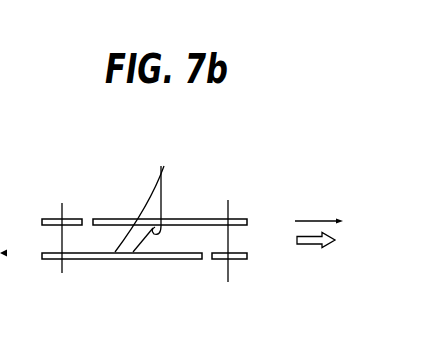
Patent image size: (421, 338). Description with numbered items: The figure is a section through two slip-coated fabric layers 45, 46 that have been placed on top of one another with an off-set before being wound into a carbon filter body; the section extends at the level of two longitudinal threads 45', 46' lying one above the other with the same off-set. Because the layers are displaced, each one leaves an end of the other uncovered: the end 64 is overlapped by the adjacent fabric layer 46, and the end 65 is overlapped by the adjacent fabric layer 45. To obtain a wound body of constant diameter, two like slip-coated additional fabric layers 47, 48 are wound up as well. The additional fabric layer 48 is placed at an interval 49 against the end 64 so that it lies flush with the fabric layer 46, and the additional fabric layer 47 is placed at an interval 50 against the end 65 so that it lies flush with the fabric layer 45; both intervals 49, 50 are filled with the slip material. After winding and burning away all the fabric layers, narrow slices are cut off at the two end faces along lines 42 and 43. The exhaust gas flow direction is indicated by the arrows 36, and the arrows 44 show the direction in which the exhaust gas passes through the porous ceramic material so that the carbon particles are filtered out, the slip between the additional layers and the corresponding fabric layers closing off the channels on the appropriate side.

The exhaust gas flow direction arrows 36 is at (305, 246).
The cutting line 42 is at (62, 213).
The cutting line 43 is at (232, 211).
The exhaust gas exit direction arrows 44 is at (305, 220).
The fabric layer 45 is at (122, 282).
The longitudinal thread 45' is at (118, 268).
The fabric layer 46 is at (224, 177).
The longitudinal thread 46' is at (195, 178).
The additional fabric layer 47 is at (72, 213).
The additional fabric layer 48 is at (218, 265).
The interval 49 is at (204, 261).
The interval 50 is at (88, 217).
The end 64 is at (192, 266).
The end 65 is at (100, 211).